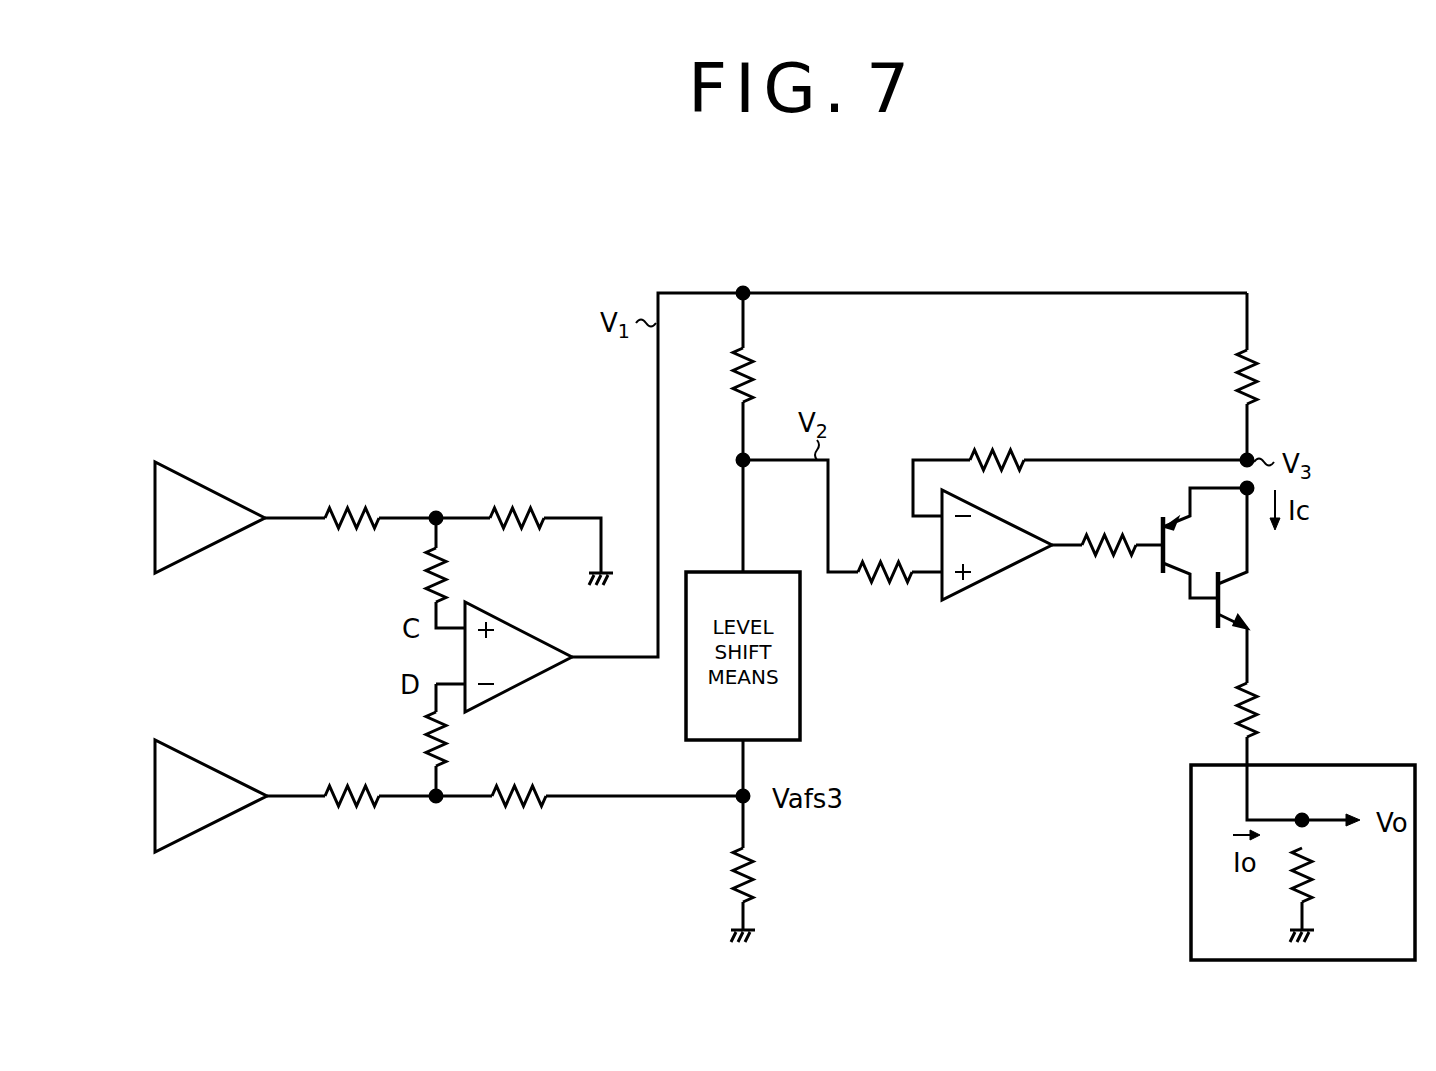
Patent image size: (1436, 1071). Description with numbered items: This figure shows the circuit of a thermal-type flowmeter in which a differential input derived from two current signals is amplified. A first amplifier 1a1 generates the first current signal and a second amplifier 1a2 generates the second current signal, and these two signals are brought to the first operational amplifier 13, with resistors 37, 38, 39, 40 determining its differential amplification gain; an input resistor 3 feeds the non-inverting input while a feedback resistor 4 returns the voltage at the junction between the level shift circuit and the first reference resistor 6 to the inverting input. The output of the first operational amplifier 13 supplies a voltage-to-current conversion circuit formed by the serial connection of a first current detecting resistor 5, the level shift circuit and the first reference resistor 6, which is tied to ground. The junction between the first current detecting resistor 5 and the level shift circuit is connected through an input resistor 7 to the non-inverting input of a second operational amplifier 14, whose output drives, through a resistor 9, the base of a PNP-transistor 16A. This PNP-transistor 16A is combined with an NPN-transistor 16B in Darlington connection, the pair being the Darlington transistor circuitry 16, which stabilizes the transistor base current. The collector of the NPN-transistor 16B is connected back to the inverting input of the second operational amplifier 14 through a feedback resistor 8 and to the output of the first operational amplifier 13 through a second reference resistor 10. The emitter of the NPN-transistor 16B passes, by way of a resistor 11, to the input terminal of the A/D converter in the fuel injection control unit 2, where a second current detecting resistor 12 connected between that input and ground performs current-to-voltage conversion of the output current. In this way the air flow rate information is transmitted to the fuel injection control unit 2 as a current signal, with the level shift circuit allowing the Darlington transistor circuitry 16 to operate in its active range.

The first amplifier 1a1 is at (210, 527).
The second amplifier 1a2 is at (211, 806).
The resistor 37 is at (377, 532).
The resistor 38 is at (551, 533).
The resistor 39 is at (379, 812).
The resistor 40 is at (617, 812).
The input resistor 3 is at (422, 573).
The feedback resistor 4 is at (422, 740).
The first operational amplifier 13 is at (856, 502).
The first current detecting resistor 5 is at (777, 376).
The first reference resistor 6 is at (776, 895).
The input resistor 7 is at (842, 555).
The feedback resistor 8 is at (1080, 453).
The resistor 9 is at (1107, 515).
The second operational amplifier 14 is at (997, 560).
The Darlington transistor circuitry 16 is at (1212, 558).
The PNP-transistor 16A is at (1205, 543).
The NPN-transistor 16B is at (1258, 558).
The second reference resistor 10 is at (1282, 376).
The resistor 11 is at (1237, 724).
The fuel injection control unit 2 is at (1303, 834).
The second current detecting resistor 12 is at (1348, 895).